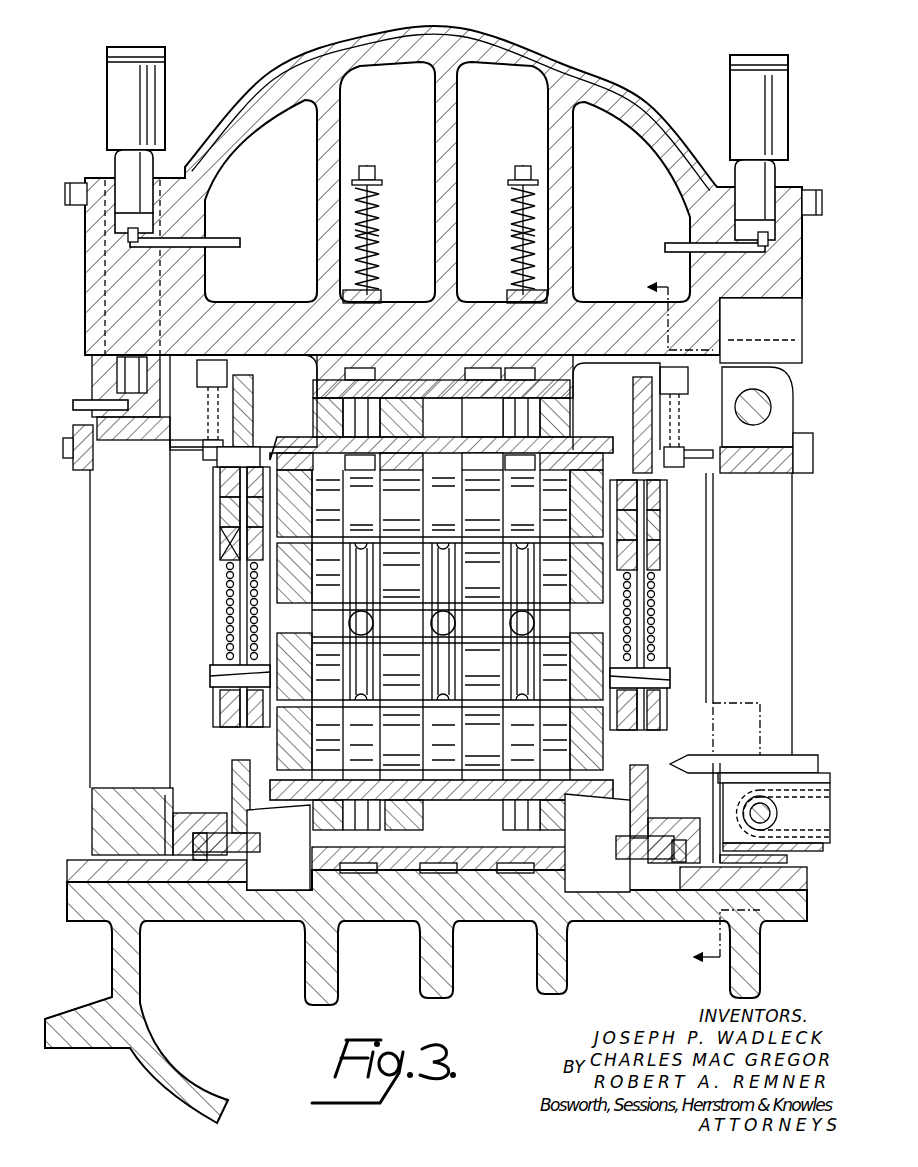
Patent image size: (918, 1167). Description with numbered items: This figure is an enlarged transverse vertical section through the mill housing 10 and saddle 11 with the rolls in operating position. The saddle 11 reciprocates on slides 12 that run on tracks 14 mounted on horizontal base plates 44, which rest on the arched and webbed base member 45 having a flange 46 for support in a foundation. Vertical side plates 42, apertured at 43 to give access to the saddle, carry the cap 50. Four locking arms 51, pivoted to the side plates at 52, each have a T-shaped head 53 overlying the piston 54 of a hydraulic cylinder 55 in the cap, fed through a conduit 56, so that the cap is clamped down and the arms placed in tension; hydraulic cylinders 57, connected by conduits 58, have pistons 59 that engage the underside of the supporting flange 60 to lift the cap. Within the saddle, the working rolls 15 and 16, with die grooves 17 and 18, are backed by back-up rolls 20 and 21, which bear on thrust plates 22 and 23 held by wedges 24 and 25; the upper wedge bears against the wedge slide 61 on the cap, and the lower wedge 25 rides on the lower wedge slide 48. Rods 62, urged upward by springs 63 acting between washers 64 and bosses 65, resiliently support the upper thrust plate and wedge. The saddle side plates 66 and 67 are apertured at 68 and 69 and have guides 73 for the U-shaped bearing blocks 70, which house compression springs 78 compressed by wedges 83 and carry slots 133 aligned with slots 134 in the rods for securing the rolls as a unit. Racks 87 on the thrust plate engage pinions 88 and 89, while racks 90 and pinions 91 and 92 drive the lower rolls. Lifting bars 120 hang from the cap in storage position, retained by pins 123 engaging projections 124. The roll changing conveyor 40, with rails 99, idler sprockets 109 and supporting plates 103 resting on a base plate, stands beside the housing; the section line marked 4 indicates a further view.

The mill housing 10 is at (652, 84).
The cap 50 is at (298, 66).
The T-shaped head portion 53 is at (108, 93).
The piston 54 is at (118, 163).
The hydraulic cylinder 55 is at (125, 227).
The conduit 56 is at (235, 240).
The rod 62 is at (380, 214).
The spring 63 is at (380, 249).
The washer 64 is at (380, 184).
The supporting boss 65 is at (383, 300).
The section line 4 is at (689, 624).
The supporting flange 60 is at (92, 358).
The piston 59 is at (95, 375).
The hydraulic cylinder 57 is at (78, 402).
The conduit 58 is at (73, 445).
The projection 124 is at (170, 438).
The pin 123 is at (190, 452).
The lifting bar 120 is at (210, 396).
The aperture 69 is at (245, 447).
The side plate 67 is at (254, 398).
The wedge slide 61 is at (318, 380).
The side plate 66 is at (633, 386).
The aperture 68 is at (633, 455).
The locking arm 51 is at (761, 330).
The pivot 52 is at (785, 410).
The aperture 43 is at (441, 614).
The side plate 42 is at (92, 805).
The rail 99 is at (758, 764).
The saddle 11 is at (210, 496).
The guide 73 is at (222, 466).
The slot 133 is at (225, 522).
The slot 134 is at (225, 549).
The U-shaped bearing block 70 is at (225, 560).
The compression spring 78 is at (226, 622).
The wedge 83 is at (212, 684).
The wedge 24 is at (441, 417).
The thrust plate 22 is at (441, 448).
The pinion 88 is at (440, 503).
The pinion 89 is at (440, 573).
The pinion 92 is at (440, 666).
The pinion 91 is at (440, 738).
The rack 87 is at (441, 625).
The back-up roll 20 is at (482, 505).
The working roll 15 is at (482, 575).
The working roll 16 is at (482, 666).
The back-up roll 21 is at (482, 740).
The die groove 17 is at (441, 614).
The die groove 18 is at (442, 621).
The thrust plate 23 is at (441, 805).
The wedge 25 is at (441, 820).
The lower wedge slide 48 is at (462, 859).
The base member 45 is at (95, 933).
The horizontal base plate 44 is at (80, 862).
The flange 46 is at (80, 1010).
The rack 90 is at (258, 812).
The track 14 is at (248, 868).
The slide 12 is at (248, 847).
The roll changing conveyor 40 is at (800, 760).
The idler sprocket 109 is at (777, 816).
The supporting plate 103 is at (787, 860).